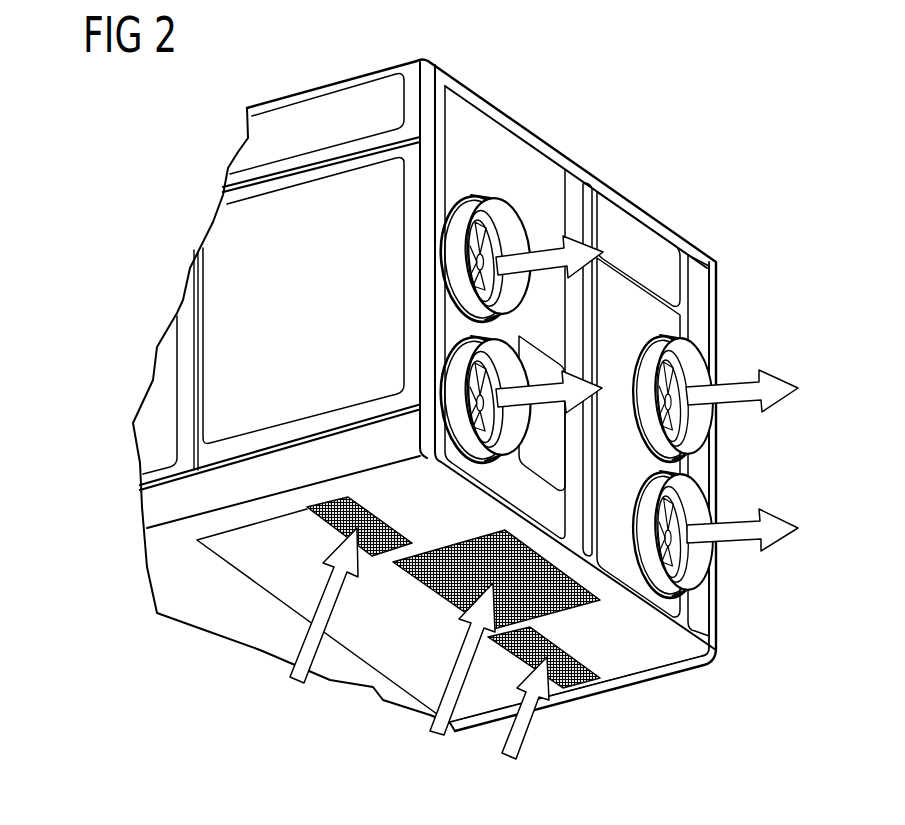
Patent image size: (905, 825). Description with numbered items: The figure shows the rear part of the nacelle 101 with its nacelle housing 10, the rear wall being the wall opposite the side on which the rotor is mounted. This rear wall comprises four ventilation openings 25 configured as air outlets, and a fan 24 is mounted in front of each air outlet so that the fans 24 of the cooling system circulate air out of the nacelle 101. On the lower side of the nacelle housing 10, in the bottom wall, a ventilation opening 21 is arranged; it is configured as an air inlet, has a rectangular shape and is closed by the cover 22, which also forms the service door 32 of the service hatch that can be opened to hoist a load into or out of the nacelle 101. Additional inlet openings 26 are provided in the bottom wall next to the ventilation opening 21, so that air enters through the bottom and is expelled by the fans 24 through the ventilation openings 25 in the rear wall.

The nacelle 101 is at (140, 190).
The nacelle housing 10 is at (499, 113).
The ventilation opening 21 is at (568, 600).
The cover 22 is at (453, 626).
The service door 32 is at (467, 612).
The fan 24 is at (720, 553).
The ventilation openings 25 is at (705, 513).
The additional inlet openings 26 is at (566, 680).